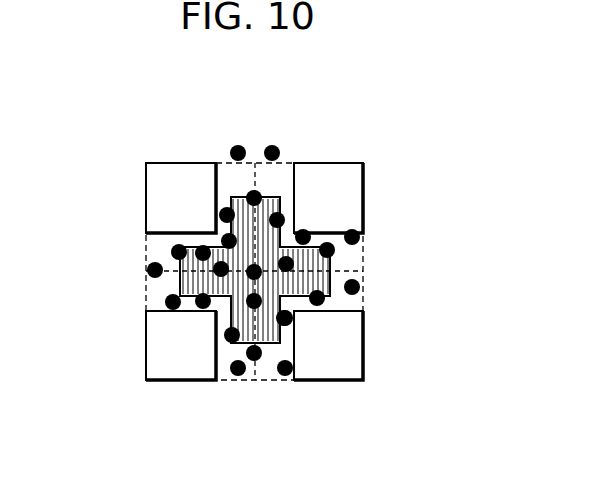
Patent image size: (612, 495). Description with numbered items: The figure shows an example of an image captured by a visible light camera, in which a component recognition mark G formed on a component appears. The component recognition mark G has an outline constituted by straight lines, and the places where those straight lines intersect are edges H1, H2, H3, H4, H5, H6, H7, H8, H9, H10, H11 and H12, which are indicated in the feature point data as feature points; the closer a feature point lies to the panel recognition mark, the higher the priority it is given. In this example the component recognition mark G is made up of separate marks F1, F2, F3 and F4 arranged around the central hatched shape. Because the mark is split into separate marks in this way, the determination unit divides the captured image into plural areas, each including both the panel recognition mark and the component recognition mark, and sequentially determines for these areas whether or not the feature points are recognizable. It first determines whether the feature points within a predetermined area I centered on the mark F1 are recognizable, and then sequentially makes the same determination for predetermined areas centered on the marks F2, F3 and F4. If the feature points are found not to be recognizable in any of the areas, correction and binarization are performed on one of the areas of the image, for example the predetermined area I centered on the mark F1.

The mark F1 is at (363, 178).
The mark F2 is at (146, 191).
The mark F3 is at (146, 363).
The mark F4 is at (358, 384).
The component recognition mark G is at (190, 281).
The predetermined area I is at (280, 197).
The edge H1 is at (282, 240).
The edge H2 is at (287, 162).
The edge H3 is at (230, 198).
The edge H4 is at (222, 237).
The edge H5 is at (170, 249).
The edge H6 is at (163, 301).
The edge H7 is at (226, 300).
The edge H8 is at (230, 347).
The edge H9 is at (273, 345).
The edge H10 is at (294, 299).
The edge H11 is at (327, 299).
The edge H12 is at (336, 254).